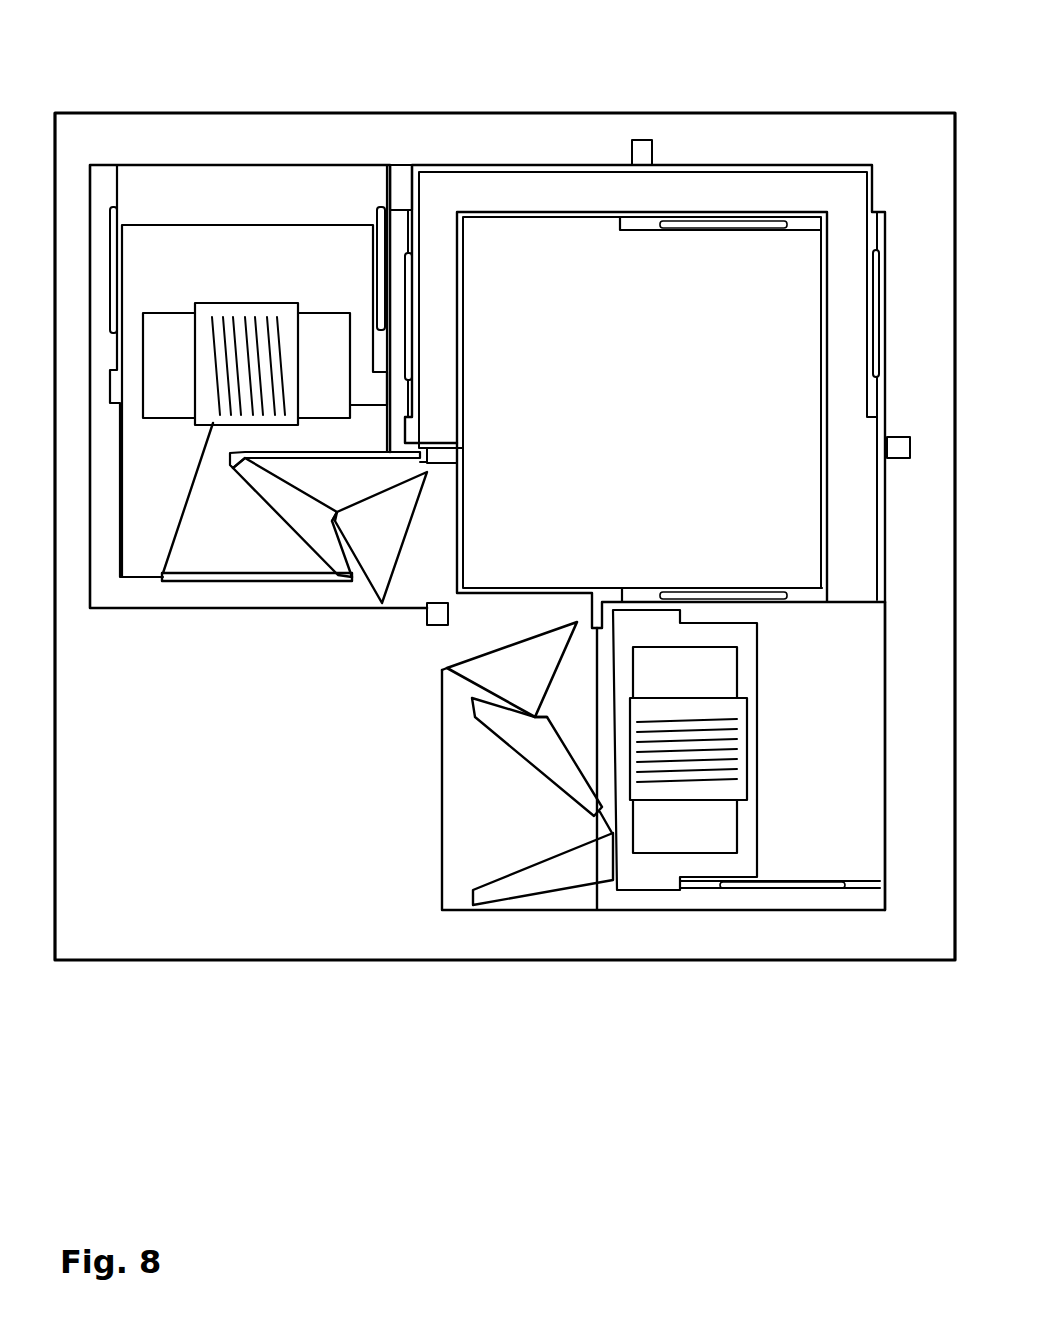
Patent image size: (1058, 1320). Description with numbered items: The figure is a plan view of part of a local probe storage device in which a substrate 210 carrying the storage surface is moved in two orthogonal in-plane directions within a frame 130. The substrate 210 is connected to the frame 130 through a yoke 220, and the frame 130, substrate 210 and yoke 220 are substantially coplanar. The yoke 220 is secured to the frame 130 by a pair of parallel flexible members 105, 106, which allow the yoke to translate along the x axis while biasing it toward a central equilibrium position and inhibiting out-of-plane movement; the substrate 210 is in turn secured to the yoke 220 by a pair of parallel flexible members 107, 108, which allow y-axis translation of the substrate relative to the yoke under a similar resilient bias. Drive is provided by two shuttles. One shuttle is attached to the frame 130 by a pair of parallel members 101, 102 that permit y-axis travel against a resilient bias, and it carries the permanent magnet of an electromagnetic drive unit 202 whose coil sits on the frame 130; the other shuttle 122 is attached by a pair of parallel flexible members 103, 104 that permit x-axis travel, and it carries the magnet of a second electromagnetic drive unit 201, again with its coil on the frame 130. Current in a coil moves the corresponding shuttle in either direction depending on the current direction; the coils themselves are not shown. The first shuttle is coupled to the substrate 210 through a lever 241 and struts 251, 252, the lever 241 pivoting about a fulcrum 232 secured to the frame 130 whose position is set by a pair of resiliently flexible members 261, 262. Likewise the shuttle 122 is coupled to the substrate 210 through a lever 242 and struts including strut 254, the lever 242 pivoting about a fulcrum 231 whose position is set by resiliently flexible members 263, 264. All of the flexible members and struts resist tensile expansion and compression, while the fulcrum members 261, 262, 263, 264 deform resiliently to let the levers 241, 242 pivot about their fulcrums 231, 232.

The parallel member 101 is at (862, 888).
The parallel member 102 is at (852, 617).
The parallel flexible member 103 is at (115, 185).
The parallel flexible member 104 is at (383, 187).
The parallel flexible member 105 is at (410, 232).
The parallel flexible member 106 is at (883, 230).
The parallel flexible member 107 is at (813, 227).
The parallel flexible member 108 is at (785, 602).
The shuttle 122 is at (263, 193).
The frame 130 is at (100, 953).
The electromagnetic drive unit 201 is at (320, 330).
The electromagnetic drive unit 202 is at (680, 830).
The substrate 210 is at (553, 257).
The yoke 220 is at (703, 192).
The fulcrum 231 is at (363, 540).
The fulcrum 232 is at (537, 713).
The lever 241 is at (550, 777).
The lever 242 is at (280, 510).
The strut 251 is at (470, 850).
The strut 252 is at (602, 747).
The strut 254 is at (183, 578).
The resiliently flexible member 261 is at (575, 720).
The resiliently flexible member 262 is at (450, 675).
The resiliently flexible member 263 is at (383, 497).
The resiliently flexible member 264 is at (358, 560).